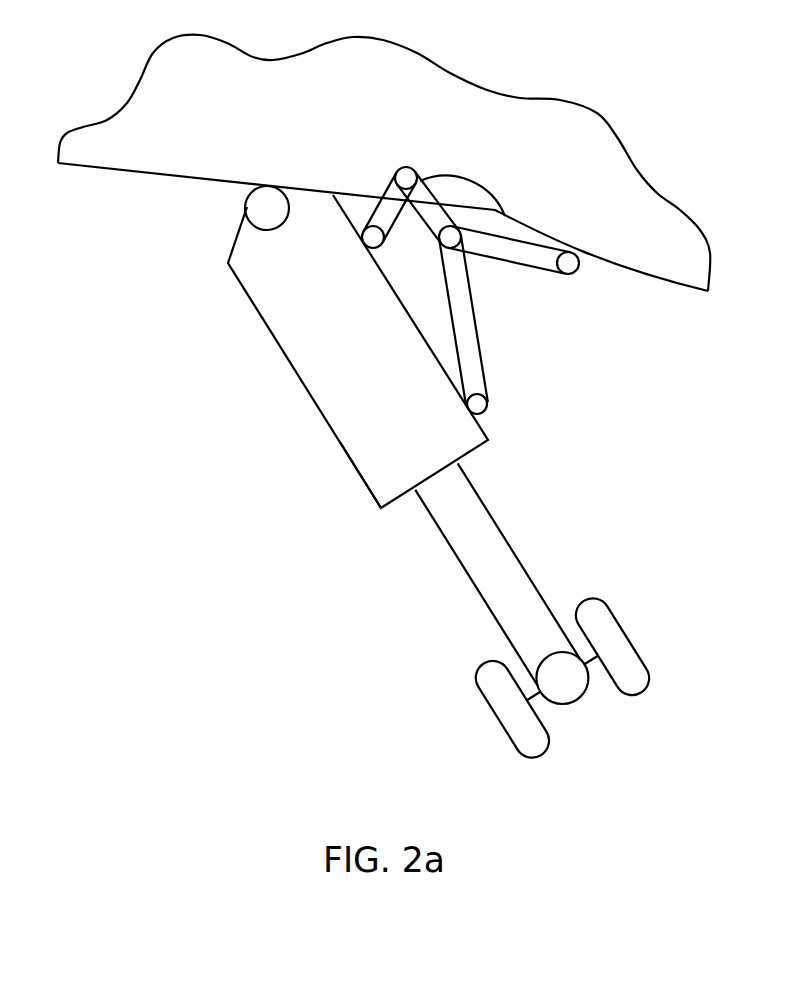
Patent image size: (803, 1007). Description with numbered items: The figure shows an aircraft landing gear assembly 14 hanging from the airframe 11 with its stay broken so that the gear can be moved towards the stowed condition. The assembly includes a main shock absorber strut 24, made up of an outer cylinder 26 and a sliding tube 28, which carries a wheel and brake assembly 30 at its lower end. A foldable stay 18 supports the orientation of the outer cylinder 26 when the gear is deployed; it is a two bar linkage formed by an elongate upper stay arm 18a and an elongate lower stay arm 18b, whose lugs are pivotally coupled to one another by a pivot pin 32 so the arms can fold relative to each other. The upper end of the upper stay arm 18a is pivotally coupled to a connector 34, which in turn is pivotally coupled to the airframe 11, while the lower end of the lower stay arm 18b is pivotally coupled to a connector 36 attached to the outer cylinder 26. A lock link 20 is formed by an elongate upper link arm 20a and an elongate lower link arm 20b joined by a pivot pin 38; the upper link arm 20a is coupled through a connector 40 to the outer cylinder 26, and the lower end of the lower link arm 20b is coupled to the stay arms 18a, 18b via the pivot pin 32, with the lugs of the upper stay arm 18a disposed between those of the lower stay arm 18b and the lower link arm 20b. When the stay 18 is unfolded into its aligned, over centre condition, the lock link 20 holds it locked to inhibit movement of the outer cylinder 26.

The airframe 11 is at (127, 165).
The aircraft landing gear assembly 14 is at (556, 404).
The foldable stay 18 is at (484, 325).
The upper stay arm 18a is at (542, 255).
The lower stay arm 18b is at (477, 348).
The lock link 20 is at (398, 230).
The upper link arm 20a is at (397, 181).
The lower link arm 20b is at (416, 192).
The main shock absorber strut 24 is at (313, 420).
The outer cylinder 26 is at (352, 465).
The sliding tube 28 is at (452, 548).
The wheel and brake assembly 30 is at (465, 704).
The pivot pin 32 is at (458, 248).
The connector 34 is at (578, 270).
The connector 36 is at (486, 406).
The pivot pin 38 is at (406, 177).
The connector 40 is at (376, 237).